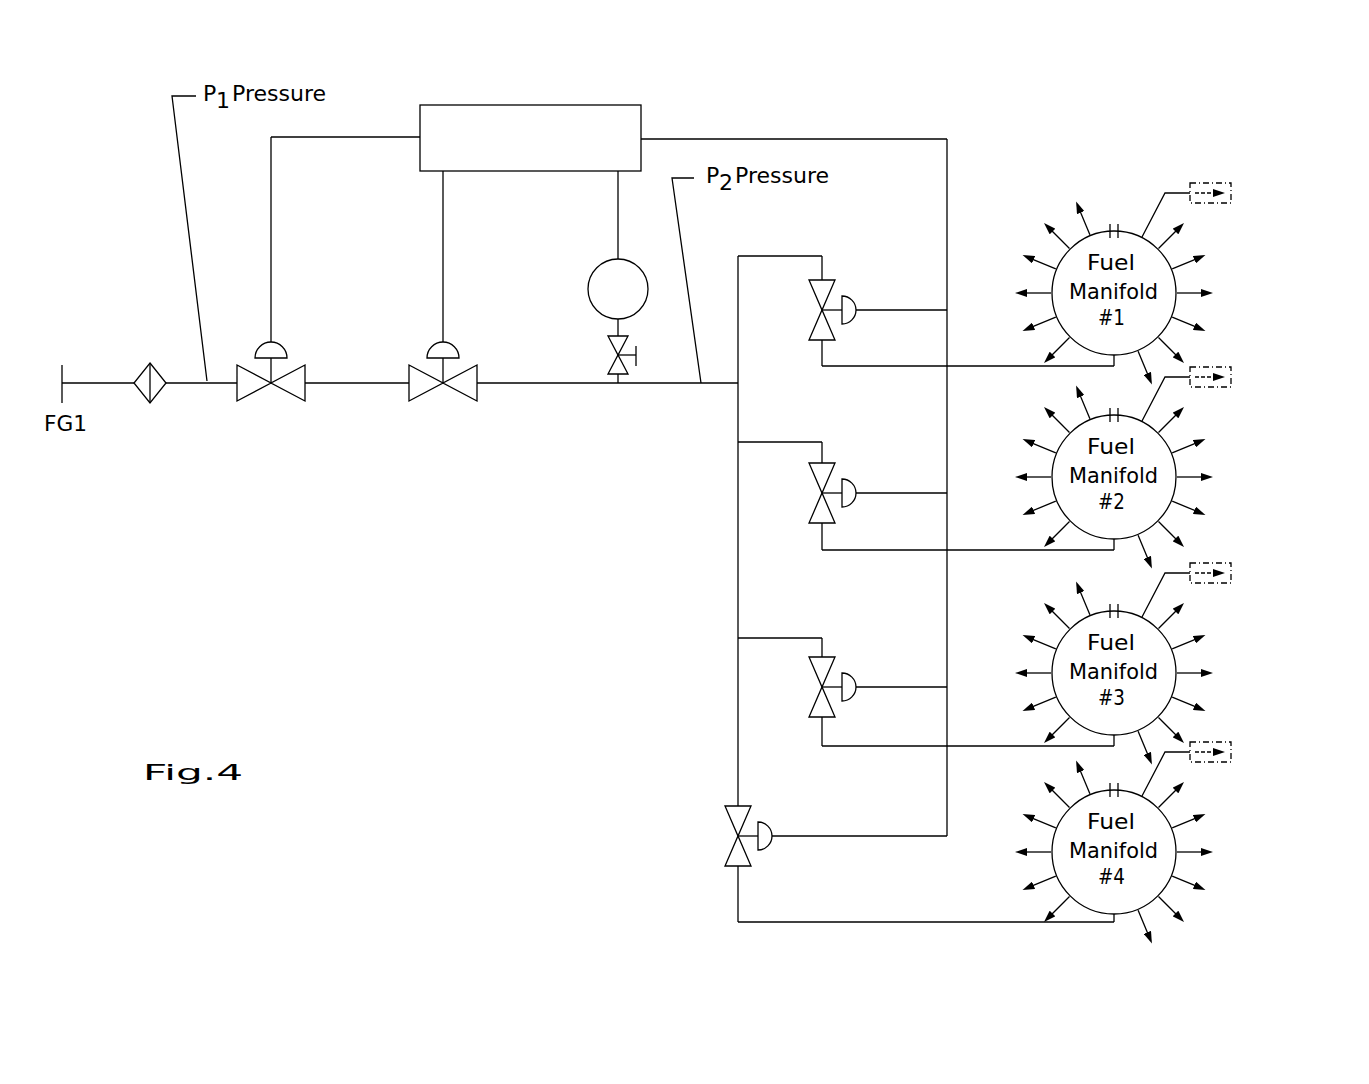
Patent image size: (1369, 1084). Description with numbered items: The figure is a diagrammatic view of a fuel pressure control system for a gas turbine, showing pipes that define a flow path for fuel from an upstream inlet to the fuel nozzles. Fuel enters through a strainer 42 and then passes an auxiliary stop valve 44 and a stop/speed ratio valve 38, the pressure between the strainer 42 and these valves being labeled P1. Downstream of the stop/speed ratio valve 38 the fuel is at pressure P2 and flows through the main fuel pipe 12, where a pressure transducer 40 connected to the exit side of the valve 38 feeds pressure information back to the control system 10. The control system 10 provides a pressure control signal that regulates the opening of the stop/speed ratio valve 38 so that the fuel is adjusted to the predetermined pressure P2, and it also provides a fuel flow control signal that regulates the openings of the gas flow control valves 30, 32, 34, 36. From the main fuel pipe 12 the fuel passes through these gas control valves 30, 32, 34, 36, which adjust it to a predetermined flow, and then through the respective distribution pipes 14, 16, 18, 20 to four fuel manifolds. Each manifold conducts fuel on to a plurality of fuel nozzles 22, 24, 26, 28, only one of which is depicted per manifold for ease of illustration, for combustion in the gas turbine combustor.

The control system 10 is at (602, 94).
The main fuel pipe 12 is at (530, 392).
The distribution pipe 14 is at (987, 366).
The distribution pipe 16 is at (983, 550).
The distribution pipe 18 is at (985, 746).
The distribution pipe 20 is at (912, 922).
The fuel nozzle 22 is at (1221, 163).
The fuel nozzle 24 is at (1218, 346).
The fuel nozzle 26 is at (1220, 551).
The fuel nozzle 28 is at (1220, 724).
The gas flow control valve 30 is at (805, 311).
The gas flow control valve 32 is at (803, 491).
The gas flow control valve 34 is at (803, 685).
The gas flow control valve 36 is at (722, 838).
The stop/speed ratio valve 38 is at (430, 406).
The pressure transducer 40 is at (588, 253).
The strainer 42 is at (161, 408).
The auxiliary stop valve 44 is at (267, 408).